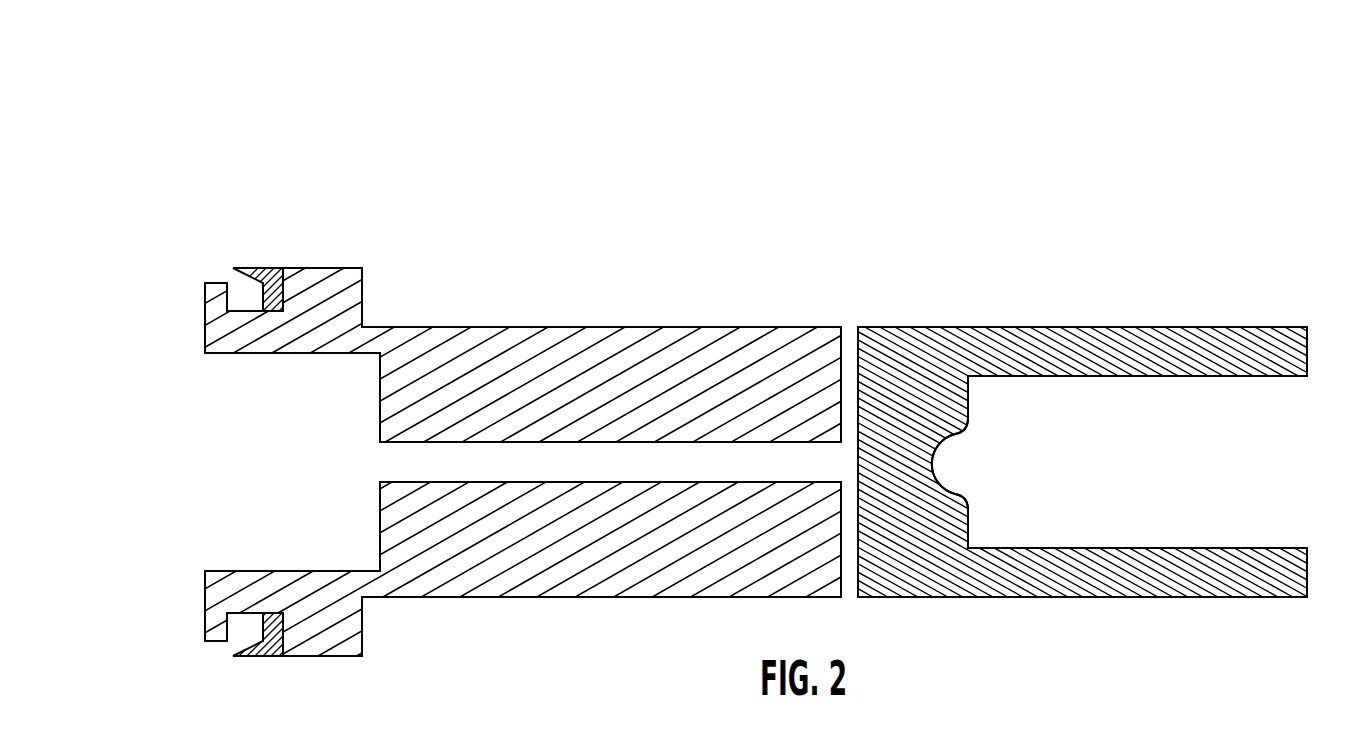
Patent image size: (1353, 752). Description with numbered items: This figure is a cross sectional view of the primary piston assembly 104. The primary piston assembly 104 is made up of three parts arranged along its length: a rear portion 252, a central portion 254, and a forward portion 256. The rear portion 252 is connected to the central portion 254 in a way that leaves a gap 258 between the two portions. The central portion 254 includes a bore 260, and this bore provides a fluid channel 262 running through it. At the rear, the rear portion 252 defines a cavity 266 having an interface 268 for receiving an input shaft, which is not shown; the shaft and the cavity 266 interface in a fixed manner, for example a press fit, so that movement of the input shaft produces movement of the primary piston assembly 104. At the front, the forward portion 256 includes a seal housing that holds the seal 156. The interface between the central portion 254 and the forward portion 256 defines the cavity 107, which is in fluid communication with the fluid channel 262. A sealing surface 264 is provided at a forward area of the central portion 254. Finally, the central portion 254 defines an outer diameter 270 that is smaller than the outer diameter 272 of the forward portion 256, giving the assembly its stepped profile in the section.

The primary piston assembly 104 is at (181, 141).
The cavity 107 is at (218, 527).
The seal 156 is at (268, 268).
The rear portion 252 is at (1095, 327).
The central portion 254 is at (544, 327).
The forward portion 256 is at (227, 355).
The gap 258 is at (851, 417).
The bore 260 is at (583, 442).
The fluid channel 262 is at (710, 460).
The sealing surface 264 is at (378, 503).
The cavity 266 is at (1162, 463).
The interface 268 is at (950, 433).
The outer diameter 270 is at (441, 327).
The outer diameter 272 is at (332, 268).